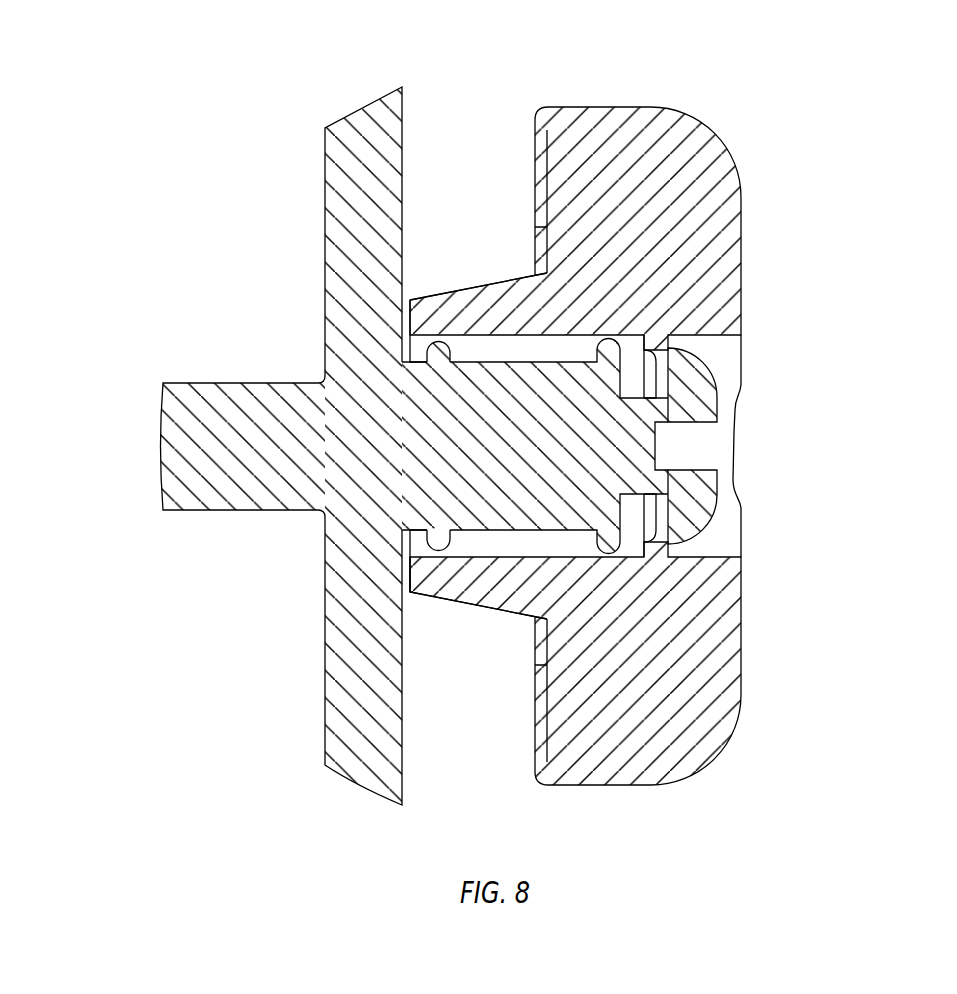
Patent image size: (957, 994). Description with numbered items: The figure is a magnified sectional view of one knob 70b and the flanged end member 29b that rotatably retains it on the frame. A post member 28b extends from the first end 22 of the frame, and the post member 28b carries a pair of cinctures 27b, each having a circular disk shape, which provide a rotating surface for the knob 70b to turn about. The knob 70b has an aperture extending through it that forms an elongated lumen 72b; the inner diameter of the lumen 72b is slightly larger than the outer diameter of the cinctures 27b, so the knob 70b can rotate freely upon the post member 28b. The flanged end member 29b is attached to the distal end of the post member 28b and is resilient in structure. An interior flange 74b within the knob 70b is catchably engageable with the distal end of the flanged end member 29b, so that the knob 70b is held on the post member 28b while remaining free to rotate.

The first end 22 is at (373, 130).
The cincture 27b is at (443, 333).
The post member 28b is at (437, 460).
The flanged end member 29b is at (702, 506).
The knob 70b is at (670, 148).
The lumen 72b is at (533, 613).
The interior flange 74b is at (658, 353).